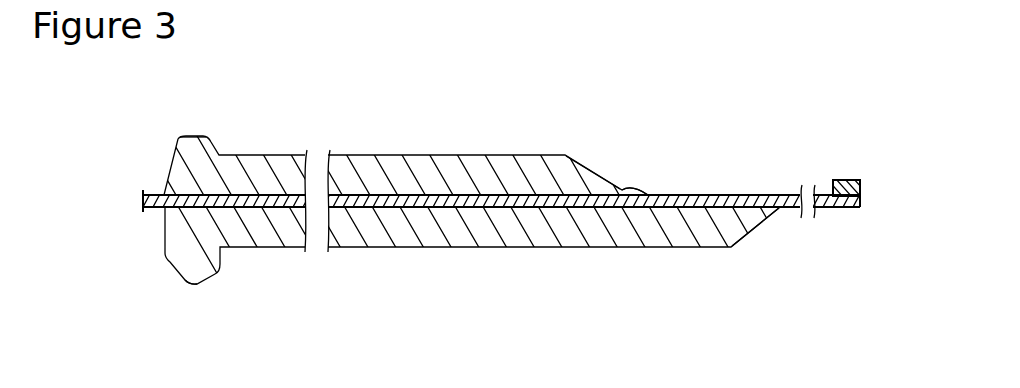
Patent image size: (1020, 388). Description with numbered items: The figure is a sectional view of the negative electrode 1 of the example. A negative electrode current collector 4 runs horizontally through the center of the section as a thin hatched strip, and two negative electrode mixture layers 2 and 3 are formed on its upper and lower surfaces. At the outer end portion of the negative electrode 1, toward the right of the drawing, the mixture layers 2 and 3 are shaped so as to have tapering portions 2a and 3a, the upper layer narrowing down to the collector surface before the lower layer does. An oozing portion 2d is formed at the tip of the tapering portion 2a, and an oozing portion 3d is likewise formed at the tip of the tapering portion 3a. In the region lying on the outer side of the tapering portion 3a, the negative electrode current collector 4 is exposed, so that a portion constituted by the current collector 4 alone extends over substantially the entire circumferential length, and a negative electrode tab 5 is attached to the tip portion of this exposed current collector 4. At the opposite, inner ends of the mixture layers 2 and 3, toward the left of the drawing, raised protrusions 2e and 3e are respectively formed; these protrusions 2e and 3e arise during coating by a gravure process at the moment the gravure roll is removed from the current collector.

The negative electrode 1 is at (492, 80).
The negative electrode mixture layer 2 is at (405, 165).
The tapering portion 2a is at (583, 171).
The oozing portion 2d is at (637, 189).
The raised protrusion 2e is at (196, 137).
The negative electrode mixture layer 3 is at (400, 235).
The tapering portion 3a is at (748, 230).
The oozing portion 3d is at (781, 210).
The raised protrusion 3e is at (193, 285).
The negative electrode current collector 4 is at (740, 196).
The negative electrode tab 5 is at (850, 180).